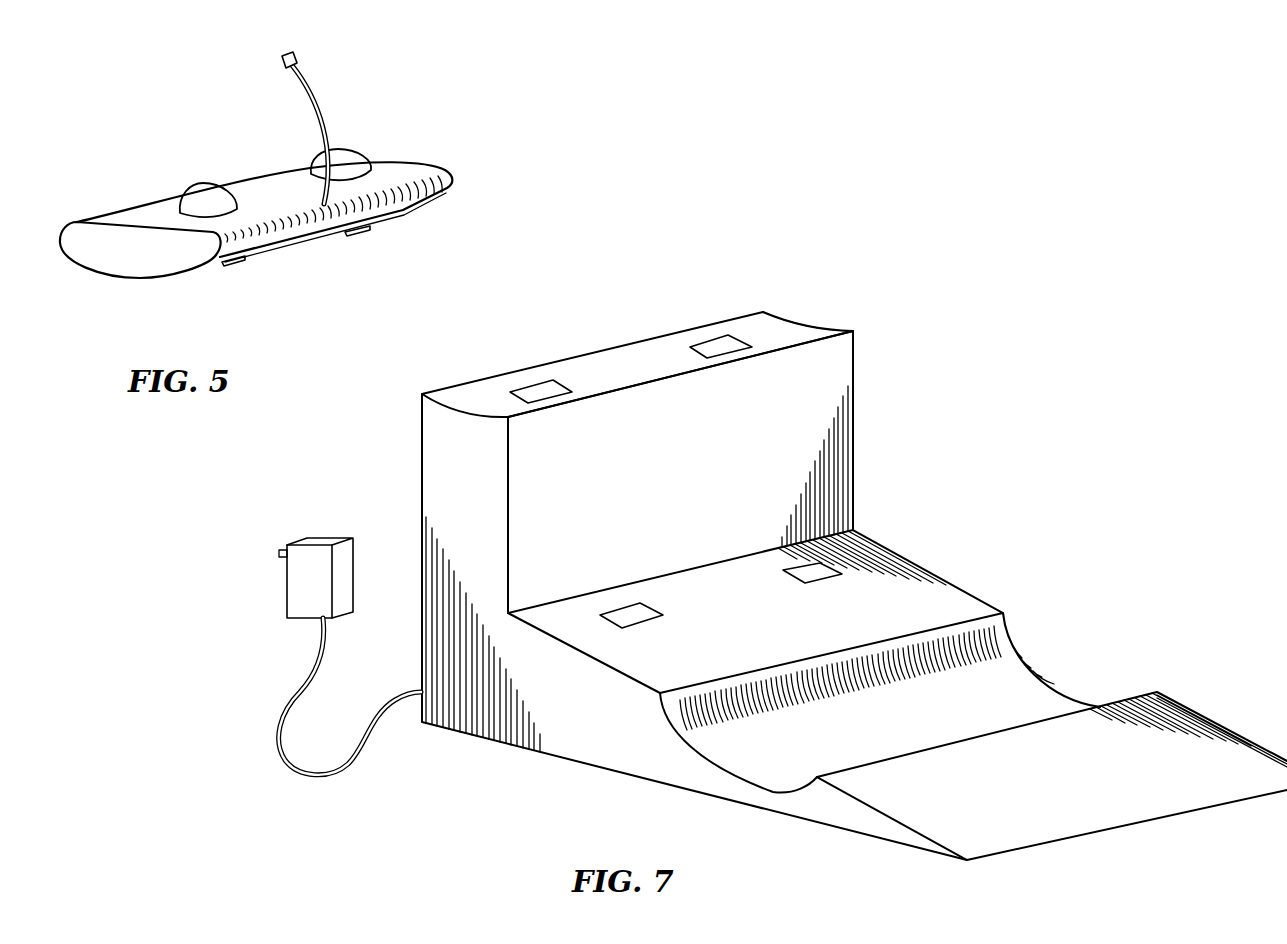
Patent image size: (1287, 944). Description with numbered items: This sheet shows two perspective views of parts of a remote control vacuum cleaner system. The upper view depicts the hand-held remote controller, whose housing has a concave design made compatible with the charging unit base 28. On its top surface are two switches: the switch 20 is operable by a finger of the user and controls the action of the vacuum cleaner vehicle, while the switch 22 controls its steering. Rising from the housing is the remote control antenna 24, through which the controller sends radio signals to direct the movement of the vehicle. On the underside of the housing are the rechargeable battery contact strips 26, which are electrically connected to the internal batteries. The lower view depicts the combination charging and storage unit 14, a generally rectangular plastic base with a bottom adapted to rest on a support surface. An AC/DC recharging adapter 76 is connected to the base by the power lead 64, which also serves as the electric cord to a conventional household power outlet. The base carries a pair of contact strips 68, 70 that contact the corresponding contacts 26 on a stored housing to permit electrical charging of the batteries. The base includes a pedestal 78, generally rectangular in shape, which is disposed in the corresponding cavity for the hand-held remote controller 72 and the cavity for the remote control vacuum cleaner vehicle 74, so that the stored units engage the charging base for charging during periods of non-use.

In FIG. 7, the combination charging and storage unit 14 is at (455, 478).
In FIG. 5, the switch 20 is at (213, 184).
In FIG. 5, the switch 22 is at (358, 154).
In FIG. 5, the antenna 24 is at (320, 93).
In FIG. 5, the rechargeable battery contact strips 26 is at (362, 235).
In FIG. 5, the charging unit base 28 is at (297, 247).
In FIG. 7, the power lead 64 is at (290, 698).
In FIG. 7, the contact strip 68 is at (545, 383).
In FIG. 7, the contact strip 70 is at (658, 614).
In FIG. 7, the cavity for hand-held remote controller 72 is at (770, 326).
In FIG. 7, the cavity for remote control vacuum cleaner vehicle 74 is at (1043, 697).
In FIG. 7, the AC/DC recharging adapter 76 is at (297, 582).
In FIG. 7, the pedestal 78 is at (1088, 795).